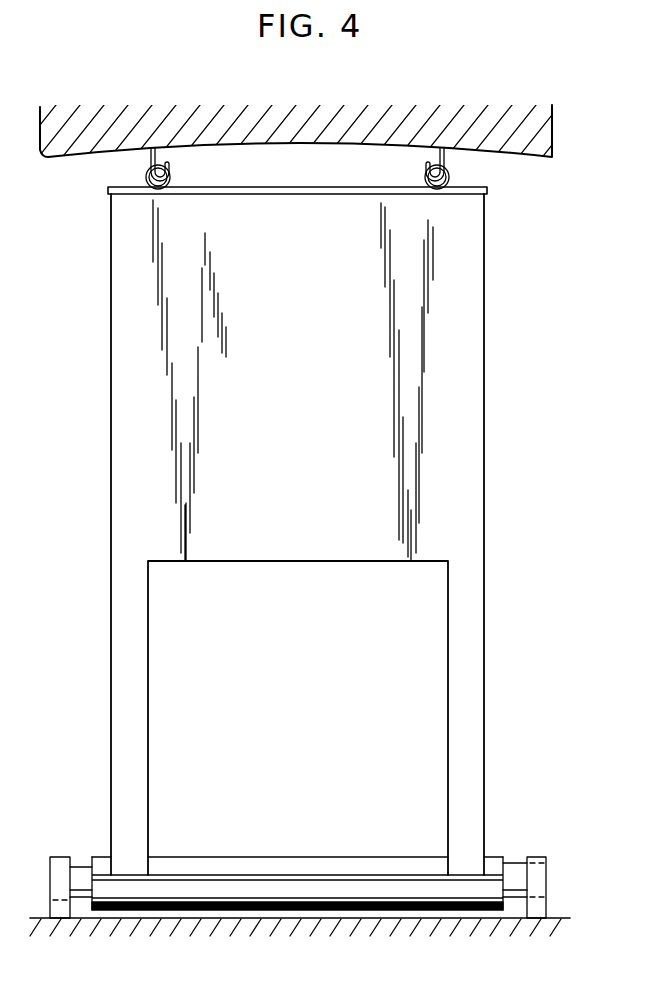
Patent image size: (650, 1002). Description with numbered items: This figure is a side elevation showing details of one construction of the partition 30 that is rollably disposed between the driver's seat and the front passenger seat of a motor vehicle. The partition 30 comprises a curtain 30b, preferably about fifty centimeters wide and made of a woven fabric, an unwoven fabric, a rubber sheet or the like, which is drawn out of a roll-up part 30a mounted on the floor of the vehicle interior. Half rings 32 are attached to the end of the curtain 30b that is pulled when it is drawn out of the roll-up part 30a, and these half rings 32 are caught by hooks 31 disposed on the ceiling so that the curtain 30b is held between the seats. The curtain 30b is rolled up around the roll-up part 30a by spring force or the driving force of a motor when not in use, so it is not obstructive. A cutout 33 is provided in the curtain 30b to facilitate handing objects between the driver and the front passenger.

The partition 30 is at (505, 333).
The roll-up part 30a is at (313, 902).
The curtain 30b is at (467, 393).
The hooks 31 is at (150, 159).
The half rings 32 is at (170, 168).
The cutout 33 is at (440, 668).